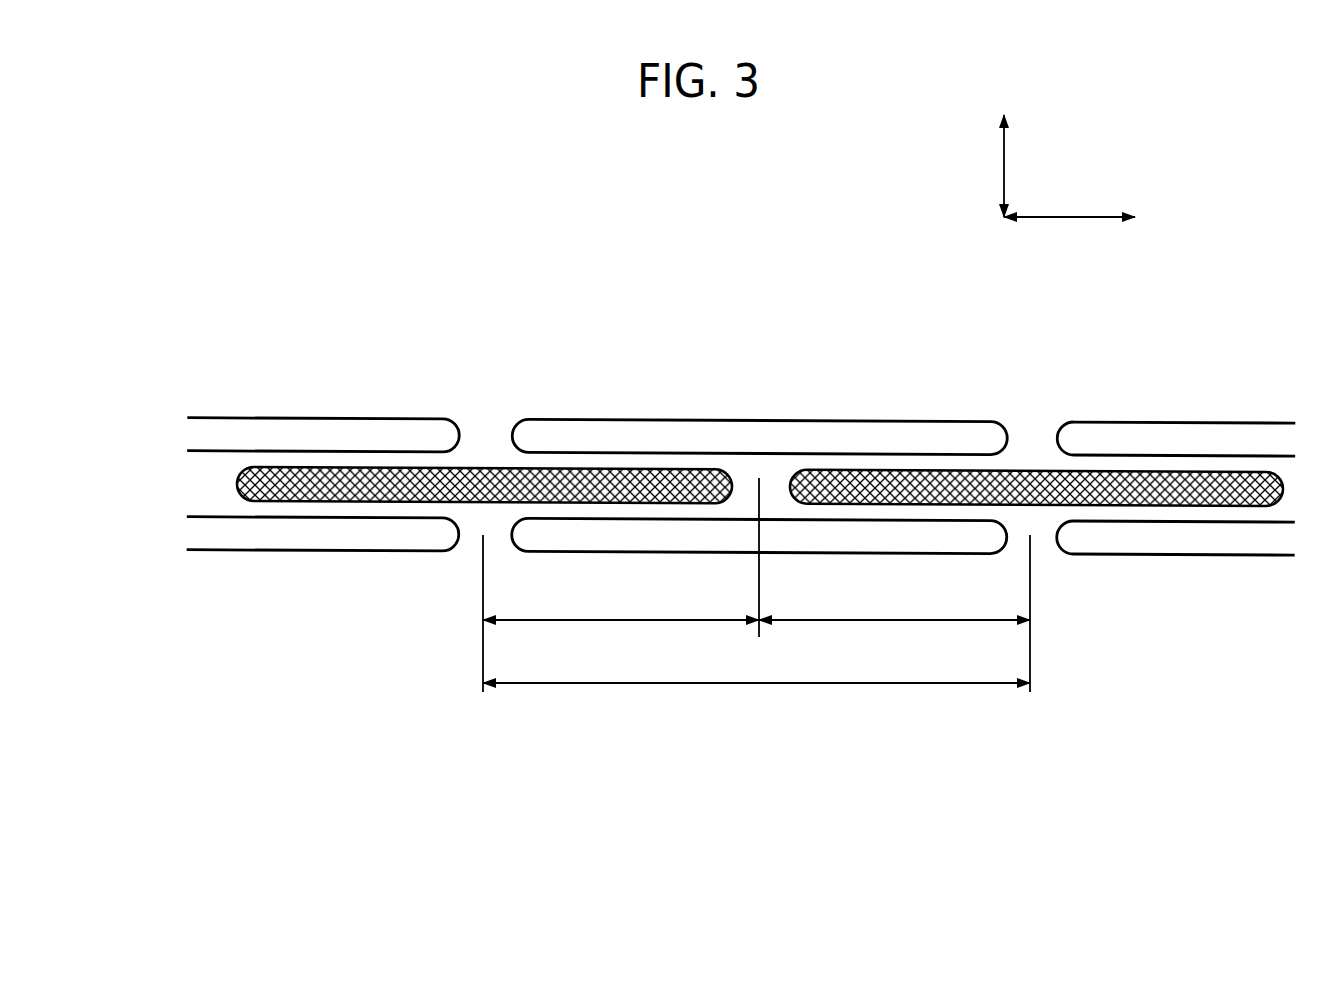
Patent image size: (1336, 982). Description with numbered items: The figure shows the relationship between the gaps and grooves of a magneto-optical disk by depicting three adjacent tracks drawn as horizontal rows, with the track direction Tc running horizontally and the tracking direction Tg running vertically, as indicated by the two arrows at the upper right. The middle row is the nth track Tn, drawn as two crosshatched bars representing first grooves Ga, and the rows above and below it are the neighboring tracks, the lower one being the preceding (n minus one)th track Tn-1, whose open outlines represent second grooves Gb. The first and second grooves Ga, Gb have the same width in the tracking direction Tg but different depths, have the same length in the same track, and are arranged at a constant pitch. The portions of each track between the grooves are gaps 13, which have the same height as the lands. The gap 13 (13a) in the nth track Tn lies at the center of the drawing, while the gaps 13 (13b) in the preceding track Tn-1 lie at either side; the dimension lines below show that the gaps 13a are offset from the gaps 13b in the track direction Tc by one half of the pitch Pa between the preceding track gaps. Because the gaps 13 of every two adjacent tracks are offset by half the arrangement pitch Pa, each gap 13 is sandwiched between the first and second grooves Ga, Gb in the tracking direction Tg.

The gaps 13 is at (767, 522).
The gaps in the nth track 13a is at (778, 483).
The gaps in the (n-1)th track 13b is at (470, 542).
The first grooves Ga is at (602, 470).
The second grooves Gb is at (1155, 437).
The nth track Tn is at (193, 481).
The (n-1)th track Tn-1 is at (175, 534).
The pitch Pa is at (653, 568).
The tracking direction Tg is at (976, 166).
The track direction Tc is at (1069, 194).